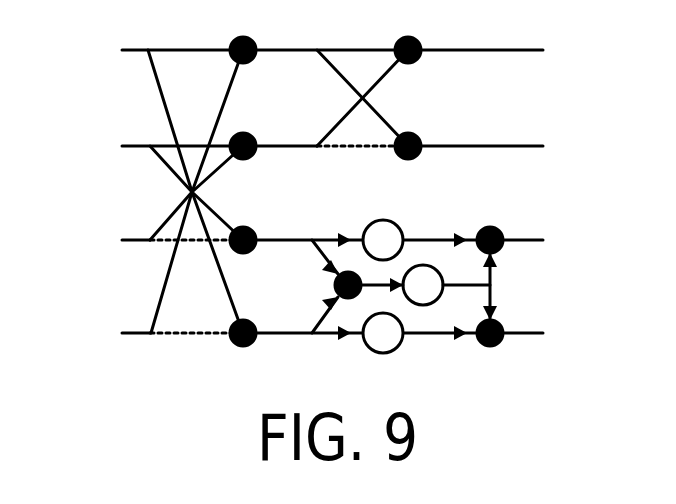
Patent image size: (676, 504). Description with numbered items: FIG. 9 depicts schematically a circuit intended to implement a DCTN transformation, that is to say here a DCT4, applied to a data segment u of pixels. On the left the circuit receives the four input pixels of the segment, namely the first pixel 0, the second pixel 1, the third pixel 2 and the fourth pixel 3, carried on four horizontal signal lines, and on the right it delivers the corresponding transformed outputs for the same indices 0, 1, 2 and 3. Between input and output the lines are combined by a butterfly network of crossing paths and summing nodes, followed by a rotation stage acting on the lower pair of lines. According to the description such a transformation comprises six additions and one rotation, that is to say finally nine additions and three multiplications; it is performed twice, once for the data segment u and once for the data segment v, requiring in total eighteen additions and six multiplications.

The input/output signal row 0 is at (335, 48).
The input/output signal row 1 is at (335, 144).
The input/output signal row 2 is at (335, 240).
The input/output signal row 3 is at (335, 333).